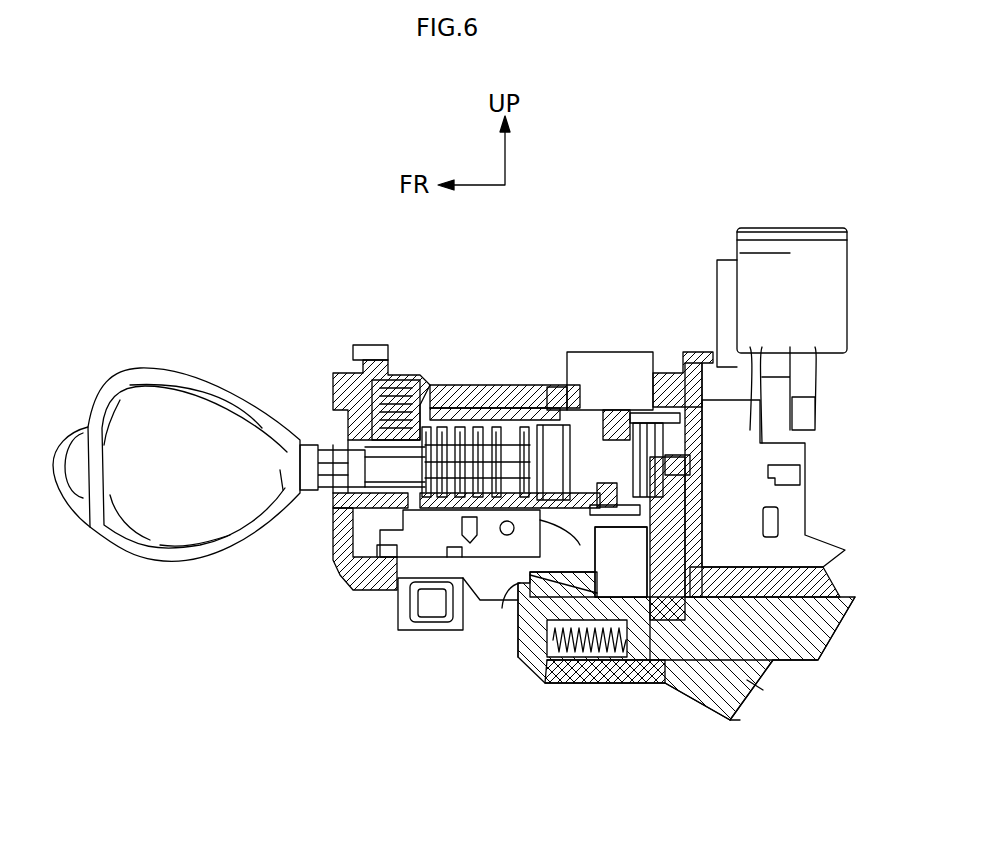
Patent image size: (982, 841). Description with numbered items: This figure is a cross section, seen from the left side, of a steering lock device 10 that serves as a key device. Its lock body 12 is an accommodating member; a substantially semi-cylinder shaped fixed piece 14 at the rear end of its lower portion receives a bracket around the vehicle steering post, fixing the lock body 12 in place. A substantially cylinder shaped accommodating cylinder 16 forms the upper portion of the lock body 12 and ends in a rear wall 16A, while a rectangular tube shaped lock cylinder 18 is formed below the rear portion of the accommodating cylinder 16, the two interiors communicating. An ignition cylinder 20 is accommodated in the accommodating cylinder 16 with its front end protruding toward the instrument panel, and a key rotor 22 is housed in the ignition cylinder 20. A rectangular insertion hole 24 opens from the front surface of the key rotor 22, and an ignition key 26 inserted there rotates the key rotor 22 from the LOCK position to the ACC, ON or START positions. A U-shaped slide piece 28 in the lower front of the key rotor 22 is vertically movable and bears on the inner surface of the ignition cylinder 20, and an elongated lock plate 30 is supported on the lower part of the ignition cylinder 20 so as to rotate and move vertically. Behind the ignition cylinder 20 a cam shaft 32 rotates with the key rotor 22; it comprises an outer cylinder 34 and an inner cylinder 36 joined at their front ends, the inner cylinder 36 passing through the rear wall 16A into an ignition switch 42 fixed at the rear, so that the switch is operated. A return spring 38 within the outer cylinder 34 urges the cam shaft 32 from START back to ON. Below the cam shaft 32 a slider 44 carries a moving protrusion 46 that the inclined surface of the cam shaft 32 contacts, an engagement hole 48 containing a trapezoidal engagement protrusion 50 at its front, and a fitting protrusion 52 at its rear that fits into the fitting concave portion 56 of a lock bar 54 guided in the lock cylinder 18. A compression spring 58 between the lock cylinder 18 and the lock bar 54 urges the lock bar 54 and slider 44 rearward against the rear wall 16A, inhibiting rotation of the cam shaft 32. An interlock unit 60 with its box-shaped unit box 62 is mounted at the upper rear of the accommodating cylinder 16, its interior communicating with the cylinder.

The steering lock device 10 is at (206, 239).
The lock body 12 is at (607, 686).
The fixed piece 14 is at (717, 720).
The accommodating cylinder 16 is at (456, 386).
The rear wall 16A is at (695, 414).
The lock cylinder 18 is at (519, 647).
The ignition cylinder 20 is at (332, 387).
The key rotor 22 is at (487, 412).
The insertion hole 24 is at (390, 445).
The ignition key 26 is at (185, 370).
The slide piece 28 is at (335, 508).
The lock plate 30 is at (495, 550).
The cam shaft 32 is at (608, 405).
The outer cylinder 34 is at (632, 412).
The inner cylinder 36 is at (672, 427).
The return spring 38 is at (692, 470).
The ignition switch 42 is at (717, 270).
The slider 44 is at (694, 527).
The moving protrusion 46 is at (630, 500).
The engagement hole 48 is at (600, 650).
The engagement protrusion 50 is at (520, 657).
The fitting protrusion 52 is at (682, 600).
The lock bar 54 is at (793, 663).
The fitting concave portion 56 is at (653, 620).
The compression spring 58 is at (565, 648).
The interlock unit 60 is at (592, 350).
The unit box 62 is at (588, 352).